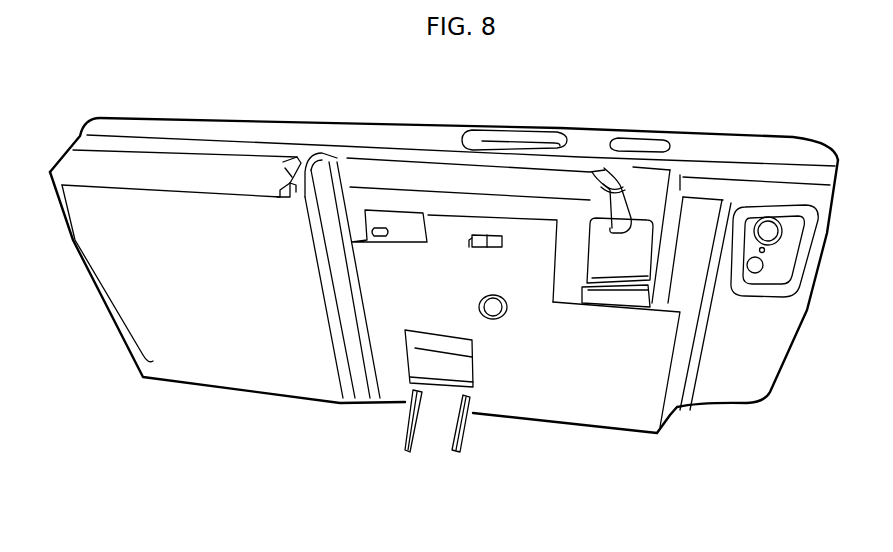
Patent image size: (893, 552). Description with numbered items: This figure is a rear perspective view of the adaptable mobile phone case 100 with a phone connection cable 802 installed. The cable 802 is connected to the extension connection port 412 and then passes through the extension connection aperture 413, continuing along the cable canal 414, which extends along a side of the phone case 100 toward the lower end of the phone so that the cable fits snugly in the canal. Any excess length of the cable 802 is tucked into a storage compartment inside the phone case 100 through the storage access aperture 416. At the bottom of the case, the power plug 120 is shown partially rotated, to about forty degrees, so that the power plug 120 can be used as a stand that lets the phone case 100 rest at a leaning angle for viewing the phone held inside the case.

The adaptable mobile phone case 100 is at (105, 97).
The cable canal 414 is at (187, 143).
The phone connection cable 802 is at (297, 150).
The storage access aperture 416 is at (293, 188).
The extension connection aperture 413 is at (648, 203).
The extension connection port 412 is at (643, 292).
The power plug 120 is at (410, 422).